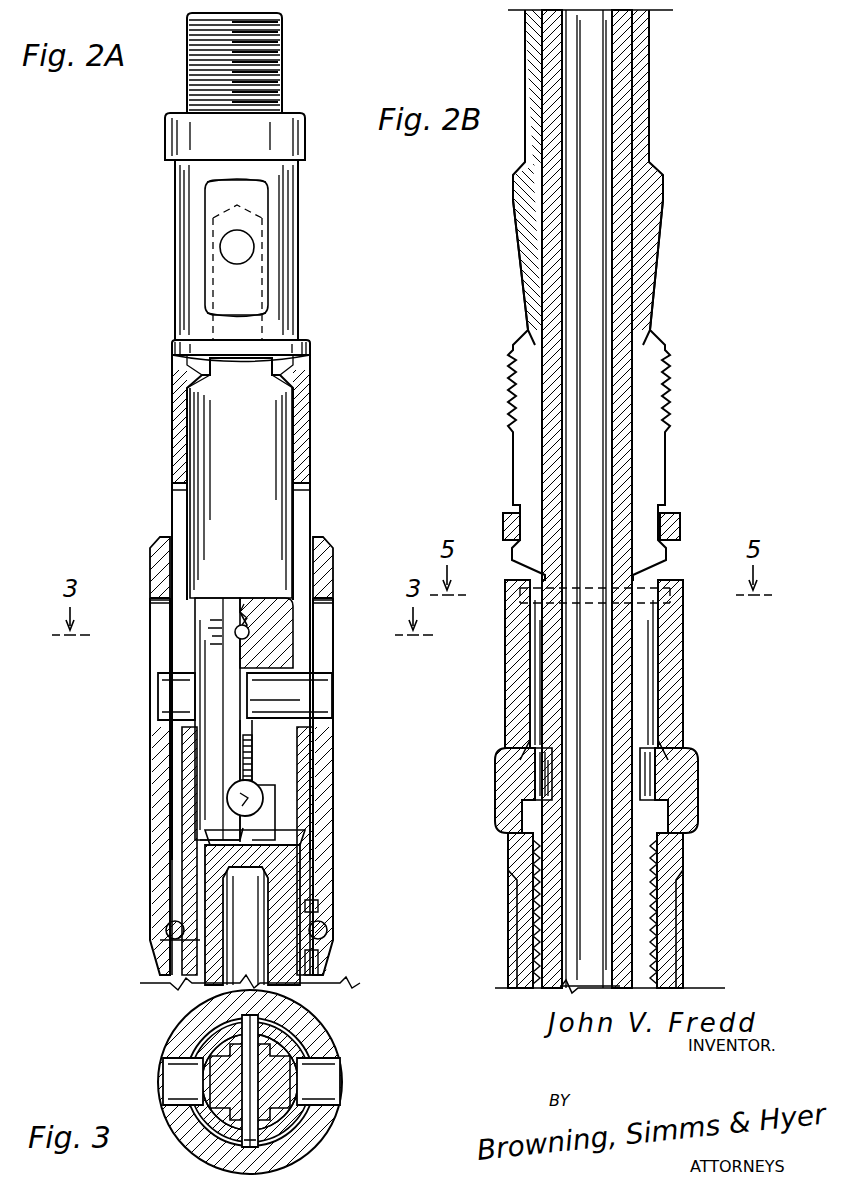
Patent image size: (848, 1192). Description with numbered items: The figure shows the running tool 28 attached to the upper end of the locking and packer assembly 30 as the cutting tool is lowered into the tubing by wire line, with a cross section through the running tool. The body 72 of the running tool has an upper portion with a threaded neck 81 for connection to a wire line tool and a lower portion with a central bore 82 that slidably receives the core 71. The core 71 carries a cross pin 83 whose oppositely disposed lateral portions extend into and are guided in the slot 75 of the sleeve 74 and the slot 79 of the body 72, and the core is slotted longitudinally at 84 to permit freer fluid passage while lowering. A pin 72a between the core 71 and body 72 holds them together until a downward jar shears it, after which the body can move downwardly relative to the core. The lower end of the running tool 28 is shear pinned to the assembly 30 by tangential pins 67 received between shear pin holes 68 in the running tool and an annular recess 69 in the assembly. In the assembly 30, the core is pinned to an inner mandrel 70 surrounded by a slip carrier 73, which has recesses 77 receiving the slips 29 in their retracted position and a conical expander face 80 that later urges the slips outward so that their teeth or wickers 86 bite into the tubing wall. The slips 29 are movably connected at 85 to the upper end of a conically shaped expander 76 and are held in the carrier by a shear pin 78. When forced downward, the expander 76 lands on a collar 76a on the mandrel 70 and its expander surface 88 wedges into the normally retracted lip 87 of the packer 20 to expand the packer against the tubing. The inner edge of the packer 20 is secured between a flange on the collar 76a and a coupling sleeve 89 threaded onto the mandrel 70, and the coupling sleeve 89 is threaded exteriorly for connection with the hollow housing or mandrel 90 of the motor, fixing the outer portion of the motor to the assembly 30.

In FIG. 2A, the threaded neck 81 is at (283, 47).
In FIG. 2A, the body 72 is at (312, 372).
In FIG. 3, the body 72 is at (318, 1030).
In FIG. 2A, the central bore 82 is at (287, 416).
In FIG. 3, the central bore 82 is at (215, 1147).
In FIG. 2A, the slot 79 is at (300, 493).
In FIG. 3, the slot 79 is at (300, 1040).
In FIG. 2A, the longitudinal slot 84 is at (215, 598).
In FIG. 3, the longitudinal slot 84 is at (280, 1118).
In FIG. 2A, the shear pin 72a is at (243, 630).
In FIG. 3, the shear pin 72a is at (292, 1150).
In FIG. 2A, the slot 75 is at (330, 600).
In FIG. 2A, the core 71 is at (275, 650).
In FIG. 3, the core 71 is at (220, 1106).
In FIG. 2A, the cross pin 83 is at (320, 685).
In FIG. 3, the cross pin 83 is at (335, 1075).
In FIG. 2A, the running tool 28 is at (350, 742).
In FIG. 2A, the sleeve 74 is at (325, 778).
In FIG. 3, the sleeve 74 is at (178, 1040).
In FIG. 2A, the slip carrier 73 is at (170, 928).
In FIG. 2B, the slip carrier 73 is at (640, 82).
In FIG. 2A, the inner mandrel 70 is at (195, 955).
In FIG. 2B, the inner mandrel 70 is at (620, 50).
In FIG. 2A, the tangential pins 67 is at (318, 912).
In FIG. 2A, the shear pin holes 68 is at (328, 930).
In FIG. 2A, the annular recess 69 is at (318, 958).
In FIG. 2B, the locking and packer assembly 30 is at (652, 122).
In FIG. 2B, the conical expander face 80 is at (657, 235).
In FIG. 2B, the recesses 77 is at (645, 320).
In FIG. 2B, the teeth or wickers 86 is at (665, 368).
In FIG. 2B, the slips 29 is at (652, 455).
In FIG. 2B, the connection 85 is at (690, 530).
In FIG. 2B, the shear pin 78 is at (672, 595).
In FIG. 2B, the expander 76 is at (686, 630).
In FIG. 2B, the expander surface 88 is at (684, 718).
In FIG. 2B, the lip 87 is at (690, 768).
In FIG. 2B, the packer 20 is at (700, 793).
In FIG. 2B, the collar 76a is at (650, 867).
In FIG. 2B, the coupling sleeve 89 is at (655, 912).
In FIG. 2B, the hollow housing or mandrel 90 is at (678, 943).